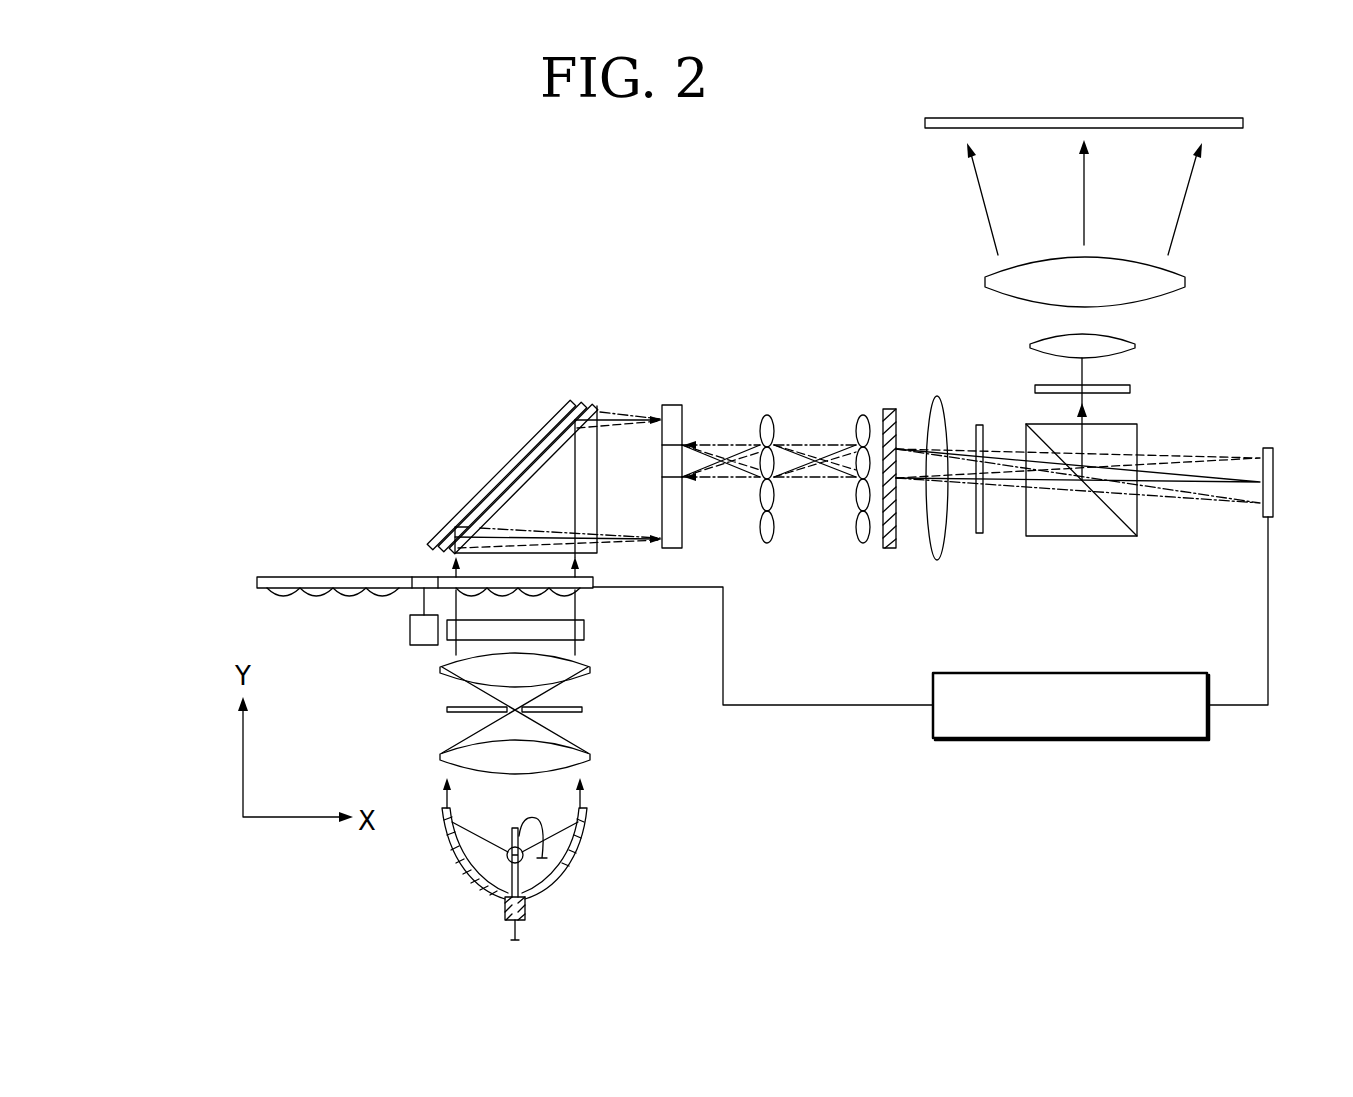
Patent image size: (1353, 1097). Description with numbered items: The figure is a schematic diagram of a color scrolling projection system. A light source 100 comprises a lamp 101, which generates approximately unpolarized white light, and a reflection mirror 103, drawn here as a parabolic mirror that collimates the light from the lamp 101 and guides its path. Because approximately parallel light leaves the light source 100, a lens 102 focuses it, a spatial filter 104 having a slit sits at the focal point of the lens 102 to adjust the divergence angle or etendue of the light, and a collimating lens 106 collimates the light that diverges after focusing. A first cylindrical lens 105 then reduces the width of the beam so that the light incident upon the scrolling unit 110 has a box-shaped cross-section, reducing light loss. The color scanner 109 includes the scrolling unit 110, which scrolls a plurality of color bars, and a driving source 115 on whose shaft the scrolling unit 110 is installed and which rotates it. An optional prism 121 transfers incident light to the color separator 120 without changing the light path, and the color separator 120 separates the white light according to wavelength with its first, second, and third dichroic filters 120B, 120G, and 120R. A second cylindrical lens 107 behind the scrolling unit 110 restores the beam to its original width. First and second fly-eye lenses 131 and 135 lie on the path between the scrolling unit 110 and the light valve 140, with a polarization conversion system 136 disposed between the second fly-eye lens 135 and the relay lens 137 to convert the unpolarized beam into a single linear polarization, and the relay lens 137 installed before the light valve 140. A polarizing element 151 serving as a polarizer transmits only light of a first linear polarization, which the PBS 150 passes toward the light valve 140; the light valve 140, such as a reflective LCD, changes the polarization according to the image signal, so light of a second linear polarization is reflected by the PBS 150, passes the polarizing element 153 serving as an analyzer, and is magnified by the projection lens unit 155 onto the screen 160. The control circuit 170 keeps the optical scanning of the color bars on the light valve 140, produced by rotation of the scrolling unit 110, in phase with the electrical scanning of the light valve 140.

The light source 100 is at (558, 859).
The lamp 101 is at (510, 858).
The lens 102 is at (590, 757).
The reflection mirror 103 is at (560, 880).
The spatial filter 104 is at (582, 709).
The first cylindrical lens 105 is at (588, 630).
The collimating lens 106 is at (590, 667).
The second cylindrical lens 107 is at (670, 406).
The color scanner 109 is at (377, 572).
The scrolling unit 110 is at (332, 577).
The driving source 115 is at (410, 629).
The color separator 120 is at (508, 415).
The third dichroic filter 120R is at (507, 468).
The second dichroic filter 120G is at (521, 468).
The first dichroic filter 120B is at (534, 443).
The prism 121 is at (527, 508).
The first fly-eye lens 131 is at (767, 415).
The second fly-eye lens 135 is at (863, 415).
The polarization conversion system 136 is at (887, 550).
The relay lens 137 is at (940, 558).
The light valve 140 is at (1268, 448).
The PBS 150 is at (1120, 536).
The polarizing element 151 is at (980, 533).
The polarizing element 153 is at (1128, 388).
The projection lens unit 155 is at (972, 265).
The screen 160 is at (1245, 123).
The control circuit 170 is at (1067, 738).